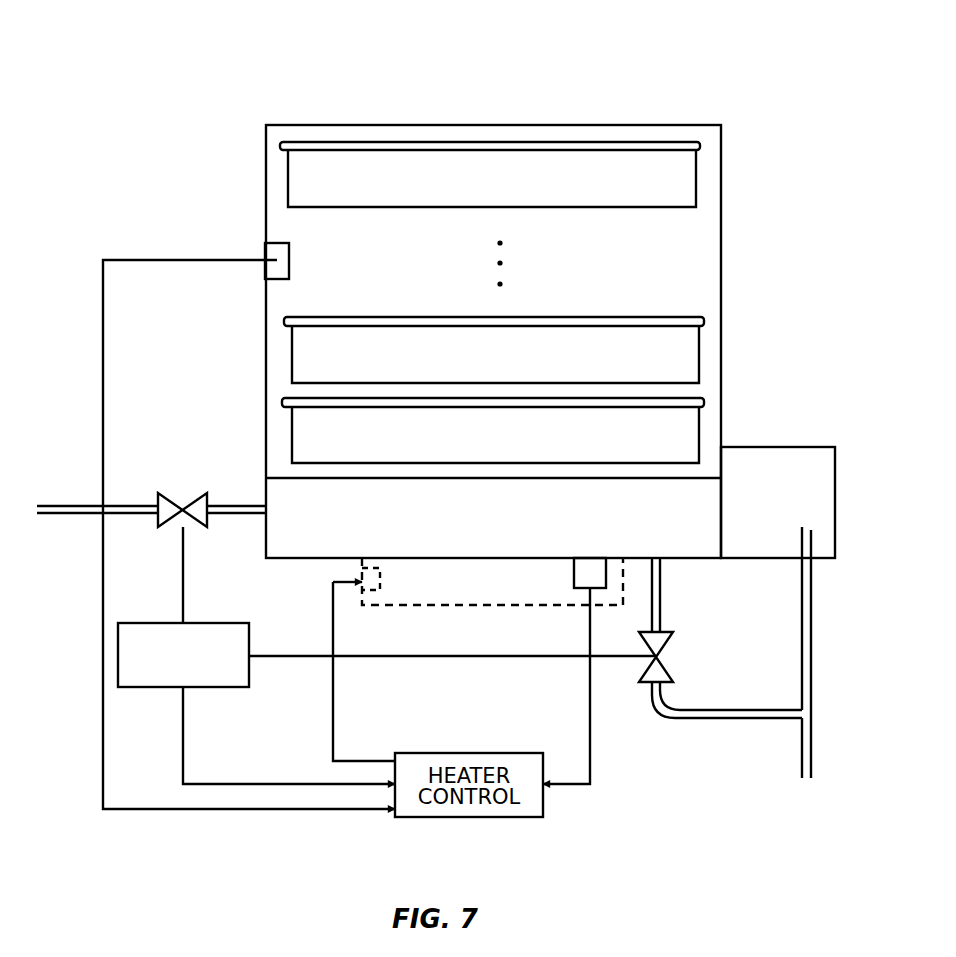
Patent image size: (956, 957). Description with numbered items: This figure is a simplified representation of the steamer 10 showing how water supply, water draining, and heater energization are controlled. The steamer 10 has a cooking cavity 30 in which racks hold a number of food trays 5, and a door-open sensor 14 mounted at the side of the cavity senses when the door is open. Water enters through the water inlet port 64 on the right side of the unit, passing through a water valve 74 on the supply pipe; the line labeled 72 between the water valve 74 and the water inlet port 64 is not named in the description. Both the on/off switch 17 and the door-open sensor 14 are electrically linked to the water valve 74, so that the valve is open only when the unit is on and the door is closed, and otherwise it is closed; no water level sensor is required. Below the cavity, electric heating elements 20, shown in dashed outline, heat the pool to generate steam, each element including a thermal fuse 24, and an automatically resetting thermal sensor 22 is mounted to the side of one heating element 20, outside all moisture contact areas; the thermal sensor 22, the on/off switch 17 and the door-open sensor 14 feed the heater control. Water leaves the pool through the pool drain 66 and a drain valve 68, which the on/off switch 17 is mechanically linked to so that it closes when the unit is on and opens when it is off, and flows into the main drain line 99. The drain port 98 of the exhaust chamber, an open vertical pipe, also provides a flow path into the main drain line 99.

The steamer 10 is at (232, 93).
The cooking cavity 30 is at (671, 256).
The food trays 5 is at (655, 189).
The door-open sensor 14 is at (290, 249).
The on/off switch 17 is at (204, 623).
The water inlet port 64 is at (266, 510).
The water inlet pipe 72 is at (245, 503).
The water valve 74 is at (197, 495).
The electric heating element 20 is at (427, 606).
The thermal fuse 24 is at (380, 579).
The thermal sensor 22 is at (573, 573).
The pool drain 66 is at (660, 572).
The drain valve 68 is at (662, 647).
The drain port 98 is at (807, 530).
The main drain line 99 is at (812, 745).